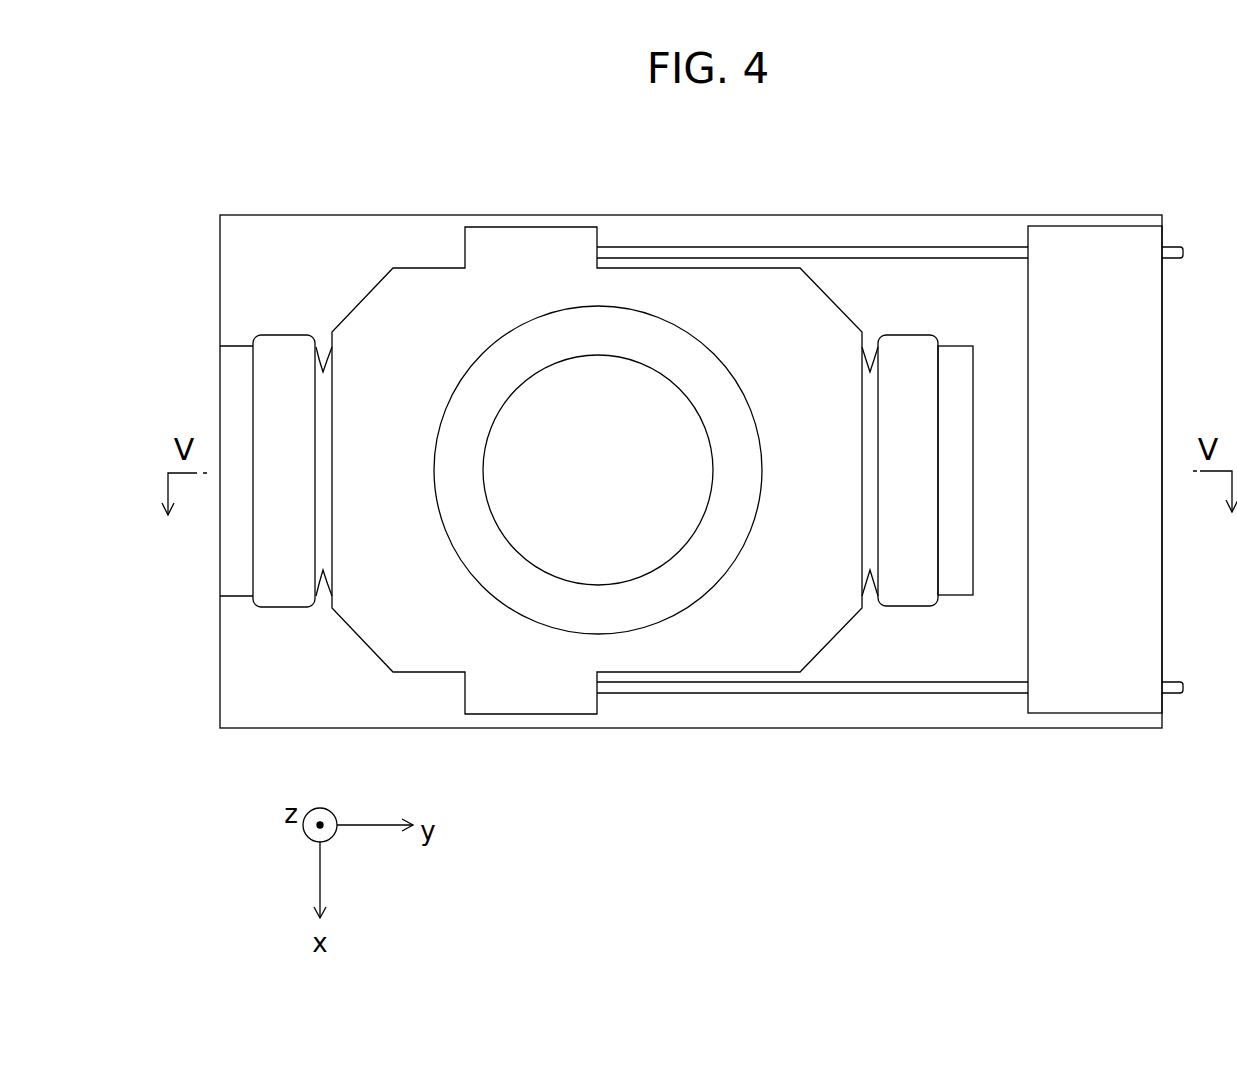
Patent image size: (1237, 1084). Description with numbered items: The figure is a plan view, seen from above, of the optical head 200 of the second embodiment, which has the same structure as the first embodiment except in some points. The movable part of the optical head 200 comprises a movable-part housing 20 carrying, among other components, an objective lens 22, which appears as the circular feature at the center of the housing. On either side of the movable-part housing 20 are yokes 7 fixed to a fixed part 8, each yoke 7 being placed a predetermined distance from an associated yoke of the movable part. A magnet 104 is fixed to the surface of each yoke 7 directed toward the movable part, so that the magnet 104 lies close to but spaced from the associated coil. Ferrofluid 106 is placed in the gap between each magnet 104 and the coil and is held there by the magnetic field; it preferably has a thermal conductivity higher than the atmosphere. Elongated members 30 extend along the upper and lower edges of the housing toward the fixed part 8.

The optical head 200 is at (270, 153).
The movable-part housing 20 is at (645, 285).
The objective lens 22 is at (563, 400).
The plate / guide member 30 is at (879, 250).
The fixed part 8 is at (1078, 253).
The yoke 7 is at (232, 550).
The magnet 104 is at (273, 593).
The ferrofluid 106 is at (318, 603).